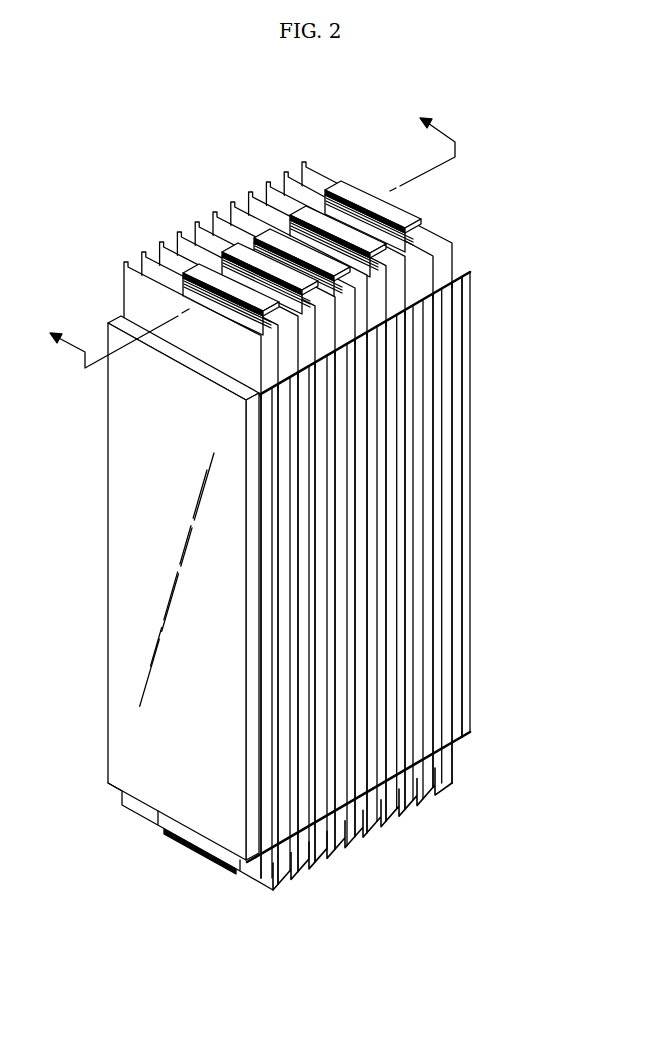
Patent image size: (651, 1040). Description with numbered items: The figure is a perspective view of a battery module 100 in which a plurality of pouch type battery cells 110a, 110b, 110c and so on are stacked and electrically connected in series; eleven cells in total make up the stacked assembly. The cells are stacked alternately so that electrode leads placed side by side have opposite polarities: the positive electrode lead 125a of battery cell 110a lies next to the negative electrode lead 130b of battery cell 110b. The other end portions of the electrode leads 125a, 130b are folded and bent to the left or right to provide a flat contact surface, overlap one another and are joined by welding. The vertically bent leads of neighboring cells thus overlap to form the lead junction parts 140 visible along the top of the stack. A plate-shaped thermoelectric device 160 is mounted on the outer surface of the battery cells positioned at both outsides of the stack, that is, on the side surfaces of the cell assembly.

The battery module 100 is at (309, 485).
The battery cell 110a is at (455, 351).
The battery cell 110b is at (435, 402).
The battery cell 110c is at (418, 446).
The positive electrode lead 125a is at (413, 223).
The negative electrode lead 130b is at (358, 195).
The lead junction part 140 is at (334, 131).
The thermoelectric device 160 is at (115, 692).